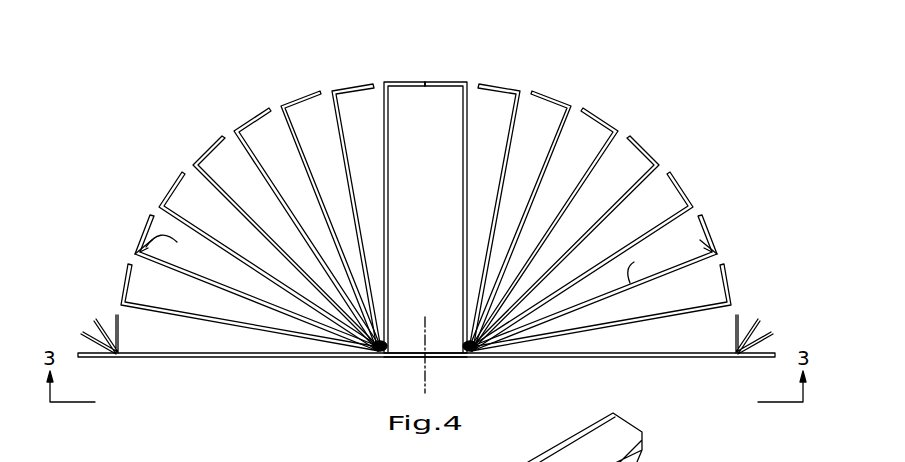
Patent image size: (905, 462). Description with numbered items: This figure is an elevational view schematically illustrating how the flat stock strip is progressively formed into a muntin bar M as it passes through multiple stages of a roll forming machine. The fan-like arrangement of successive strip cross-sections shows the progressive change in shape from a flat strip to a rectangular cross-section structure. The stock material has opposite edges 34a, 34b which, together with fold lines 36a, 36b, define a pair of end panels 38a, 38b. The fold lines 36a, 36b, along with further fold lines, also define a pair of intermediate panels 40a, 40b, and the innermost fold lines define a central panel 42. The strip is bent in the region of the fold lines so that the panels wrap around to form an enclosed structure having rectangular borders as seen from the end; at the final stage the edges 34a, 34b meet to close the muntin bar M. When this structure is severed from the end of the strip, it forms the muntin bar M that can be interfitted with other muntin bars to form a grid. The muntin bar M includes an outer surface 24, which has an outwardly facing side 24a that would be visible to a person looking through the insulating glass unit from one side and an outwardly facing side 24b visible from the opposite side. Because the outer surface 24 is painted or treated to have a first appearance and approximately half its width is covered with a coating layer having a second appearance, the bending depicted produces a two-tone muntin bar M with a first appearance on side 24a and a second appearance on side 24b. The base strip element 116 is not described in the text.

The outer surface 24 is at (372, 362).
The outwardly facing side 24a is at (254, 203).
The outwardly facing side 24b is at (596, 210).
The edge 34a is at (319, 88).
The edge 34b is at (479, 81).
The fold line 36a is at (136, 251).
The fold line 36b is at (717, 251).
The end panel 38a is at (141, 228).
The end panel 38b is at (709, 227).
The intermediate panel 40a is at (179, 251).
The intermediate panel 40b is at (650, 262).
The central panel 42 is at (415, 352).
The base strip 116 is at (240, 369).
The muntin bar M is at (420, 58).